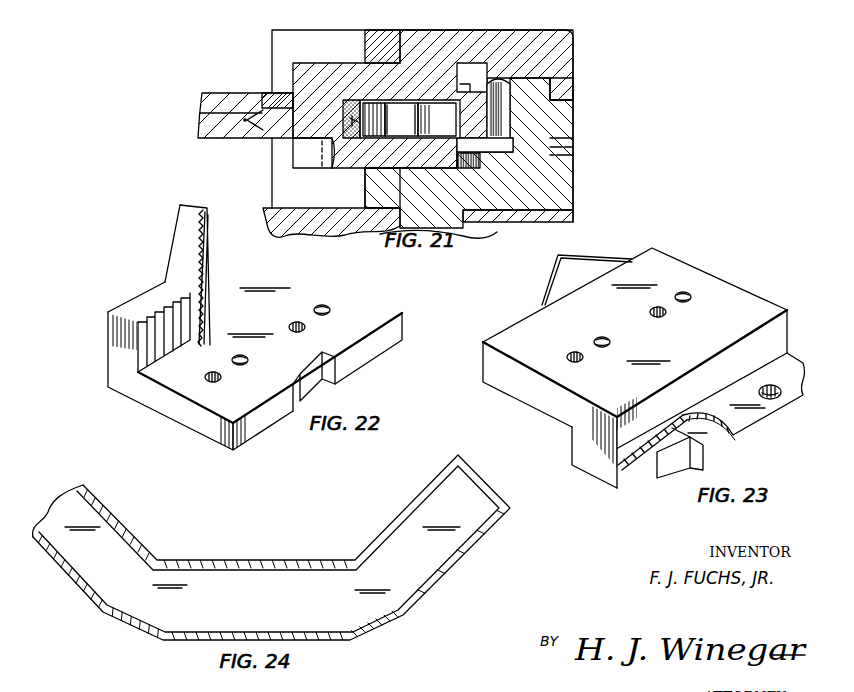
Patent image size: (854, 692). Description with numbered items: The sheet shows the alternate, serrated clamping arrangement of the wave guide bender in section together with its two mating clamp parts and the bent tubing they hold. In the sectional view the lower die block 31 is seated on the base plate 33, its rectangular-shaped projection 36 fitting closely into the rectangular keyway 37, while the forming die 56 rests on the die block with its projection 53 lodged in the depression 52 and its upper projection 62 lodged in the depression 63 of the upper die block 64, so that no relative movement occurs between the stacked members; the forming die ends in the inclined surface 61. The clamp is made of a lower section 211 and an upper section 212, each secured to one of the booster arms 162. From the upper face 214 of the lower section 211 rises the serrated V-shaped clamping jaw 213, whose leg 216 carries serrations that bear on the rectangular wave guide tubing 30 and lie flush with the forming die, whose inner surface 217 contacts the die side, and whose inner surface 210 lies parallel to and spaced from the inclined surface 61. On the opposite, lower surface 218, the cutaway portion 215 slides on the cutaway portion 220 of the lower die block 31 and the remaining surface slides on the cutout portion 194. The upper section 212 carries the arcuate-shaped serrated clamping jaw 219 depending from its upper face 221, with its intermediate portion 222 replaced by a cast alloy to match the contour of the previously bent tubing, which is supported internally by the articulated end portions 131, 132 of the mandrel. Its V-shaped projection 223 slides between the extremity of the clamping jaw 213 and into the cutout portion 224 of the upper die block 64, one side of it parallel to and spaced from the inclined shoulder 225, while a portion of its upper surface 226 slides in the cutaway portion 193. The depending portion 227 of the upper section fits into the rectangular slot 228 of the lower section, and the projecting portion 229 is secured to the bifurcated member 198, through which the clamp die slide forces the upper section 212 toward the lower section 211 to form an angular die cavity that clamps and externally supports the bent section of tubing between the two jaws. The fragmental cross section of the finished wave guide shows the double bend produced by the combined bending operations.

In FIG. 21, the booster arm 162 is at (386, 32).
In FIG. 21, the cutaway portion 193 is at (460, 62).
In FIG. 21, the cutout portion 224 is at (473, 82).
In FIG. 21, the depression 63 is at (507, 80).
In FIG. 21, the V-shaped projection 223 is at (468, 91).
In FIG. 23, the V-shaped projection 223 is at (580, 256).
In FIG. 21, the inclined shoulder 225 is at (536, 60).
In FIG. 21, the projection 62 is at (574, 62).
In FIG. 21, the upper die block 64 is at (580, 75).
In FIG. 21, the forming die 56 is at (582, 115).
In FIG. 21, the projection 53 is at (570, 142).
In FIG. 21, the depression 52 is at (575, 152).
In FIG. 21, the lower die block 31 is at (580, 179).
In FIG. 21, the base plate 33 is at (575, 216).
In FIG. 21, the upper section 212 is at (346, 53).
In FIG. 23, the upper section 212 is at (697, 278).
In FIG. 21, the upper surface 226 is at (293, 63).
In FIG. 23, the upper surface 226 is at (583, 396).
In FIG. 21, the projecting portion 229 is at (266, 96).
In FIG. 23, the projecting portion 229 is at (752, 422).
In FIG. 21, the bifurcated member 198 is at (199, 108).
In FIG. 21, the intermediate portion 222 is at (343, 108).
In FIG. 21, the articulated end portion 132 is at (350, 122).
In FIG. 21, the rectangular wave guide tubing 30 is at (371, 97).
In FIG. 21, the upper face 221 is at (427, 103).
In FIG. 23, the upper face 221 is at (507, 394).
In FIG. 21, the articulated end portion 131 is at (431, 105).
In FIG. 21, the inclined surface 61 is at (510, 104).
In FIG. 21, the cutaway portion 215 is at (480, 146).
In FIG. 21, the rectangular slot 228 is at (243, 134).
In FIG. 22, the rectangular slot 228 is at (308, 358).
In FIG. 21, the depending portion 227 is at (294, 155).
In FIG. 23, the depending portion 227 is at (705, 452).
In FIG. 21, the lower section 211 is at (360, 183).
In FIG. 22, the lower section 211 is at (361, 293).
In FIG. 21, the upper face 214 is at (405, 140).
In FIG. 22, the upper face 214 is at (188, 392).
In FIG. 21, the lower surface 218 is at (412, 144).
In FIG. 22, the lower surface 218 is at (109, 383).
In FIG. 21, the cutout portion 194 is at (438, 166).
In FIG. 21, the cutaway portion 220 is at (503, 158).
In FIG. 21, the rectangular-shaped projection 36 is at (472, 232).
In FIG. 21, the rectangular keyway 37 is at (378, 233).
In FIG. 22, the inner surface 210 is at (173, 216).
In FIG. 22, the serrated V-shaped clamping jaw 213 is at (219, 214).
In FIG. 22, the inner surface 217 is at (153, 280).
In FIG. 22, the leg 216 is at (142, 298).
In FIG. 23, the arcuate-shaped serrated clamping jaw 219 is at (566, 455).